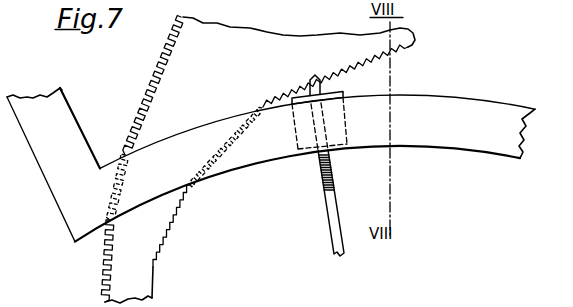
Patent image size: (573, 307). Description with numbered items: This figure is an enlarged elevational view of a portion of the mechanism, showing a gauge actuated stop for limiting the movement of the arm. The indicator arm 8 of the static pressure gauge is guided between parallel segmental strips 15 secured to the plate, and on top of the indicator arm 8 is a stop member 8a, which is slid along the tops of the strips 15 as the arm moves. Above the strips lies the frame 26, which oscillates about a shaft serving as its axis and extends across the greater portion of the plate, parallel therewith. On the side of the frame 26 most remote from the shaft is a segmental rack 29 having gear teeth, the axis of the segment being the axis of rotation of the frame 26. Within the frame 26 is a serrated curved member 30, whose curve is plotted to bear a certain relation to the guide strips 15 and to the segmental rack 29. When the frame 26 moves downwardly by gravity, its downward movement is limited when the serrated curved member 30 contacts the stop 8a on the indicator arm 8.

The segmental strips 15 is at (262, 163).
The frame 26 is at (264, 160).
The segmental rack 29 is at (142, 85).
The serrated curved member 30 is at (383, 60).
The stop member 8a is at (320, 88).
The indicator arm 8 is at (326, 214).